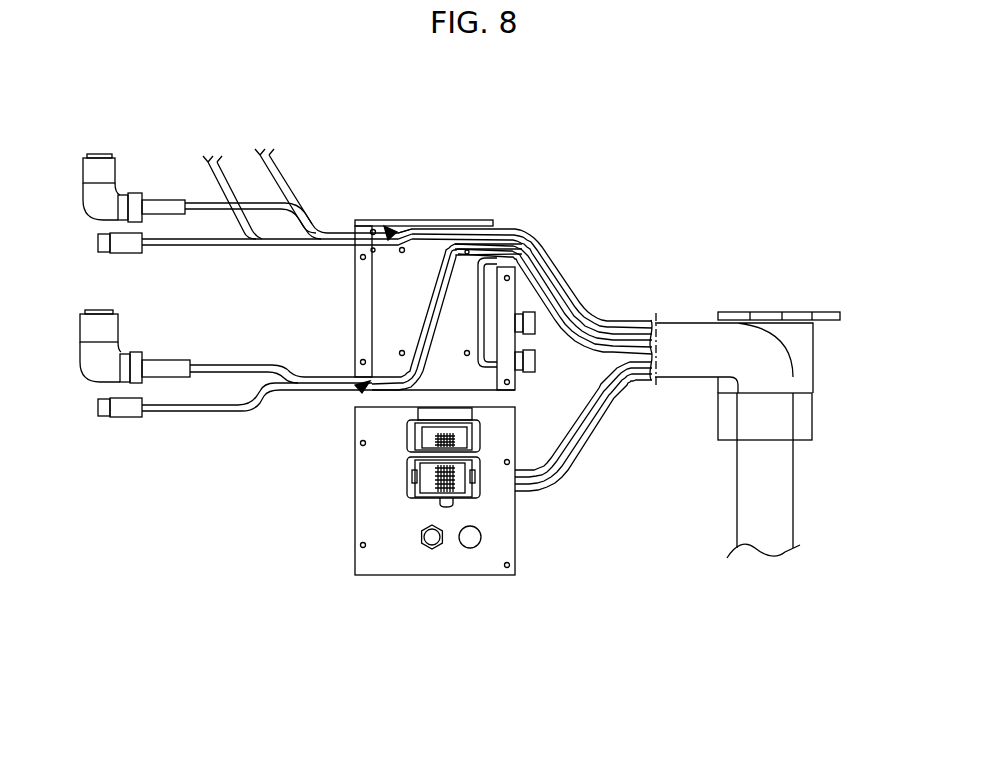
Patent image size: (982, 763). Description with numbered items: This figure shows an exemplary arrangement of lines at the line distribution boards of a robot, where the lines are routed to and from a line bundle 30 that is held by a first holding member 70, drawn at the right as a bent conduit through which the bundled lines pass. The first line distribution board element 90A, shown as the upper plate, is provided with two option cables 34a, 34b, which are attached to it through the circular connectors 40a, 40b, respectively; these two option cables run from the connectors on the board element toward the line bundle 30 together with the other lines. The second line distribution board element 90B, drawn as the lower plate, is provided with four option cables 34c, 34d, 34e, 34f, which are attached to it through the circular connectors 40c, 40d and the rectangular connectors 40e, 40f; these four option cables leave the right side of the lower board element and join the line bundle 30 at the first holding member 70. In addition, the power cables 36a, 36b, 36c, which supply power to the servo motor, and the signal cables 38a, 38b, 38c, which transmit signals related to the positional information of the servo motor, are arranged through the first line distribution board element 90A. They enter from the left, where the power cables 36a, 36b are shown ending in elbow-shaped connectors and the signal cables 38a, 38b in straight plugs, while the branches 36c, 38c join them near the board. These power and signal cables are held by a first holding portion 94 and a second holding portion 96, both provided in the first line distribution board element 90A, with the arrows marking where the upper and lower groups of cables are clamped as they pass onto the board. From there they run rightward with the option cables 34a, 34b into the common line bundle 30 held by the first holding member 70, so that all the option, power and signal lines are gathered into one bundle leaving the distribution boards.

The line bundle 30 is at (792, 485).
The first holding member 70 is at (773, 312).
The first line distribution board element 90A is at (428, 220).
The second line distribution board element 90B is at (413, 578).
The first holding portion 94 is at (390, 230).
The second holding portion 96 is at (362, 387).
The power cable 36a is at (202, 202).
The power cable 36b is at (242, 363).
The power cable 36c is at (283, 178).
The signal cable 38a is at (203, 250).
The signal cable 38b is at (222, 413).
The signal cable 38c is at (230, 187).
The option cable 34a is at (543, 275).
The option cable 34b is at (553, 300).
The option cable 34c is at (585, 397).
The option cable 34d is at (590, 413).
The option cable 34e is at (582, 435).
The option cable 34f is at (560, 487).
The circular connector 40a is at (535, 360).
The circular connector 40b is at (535, 325).
The circular connector 40c is at (472, 548).
The circular connector 40d is at (435, 549).
The rectangular connector 40e is at (412, 438).
The rectangular connector 40f is at (412, 482).